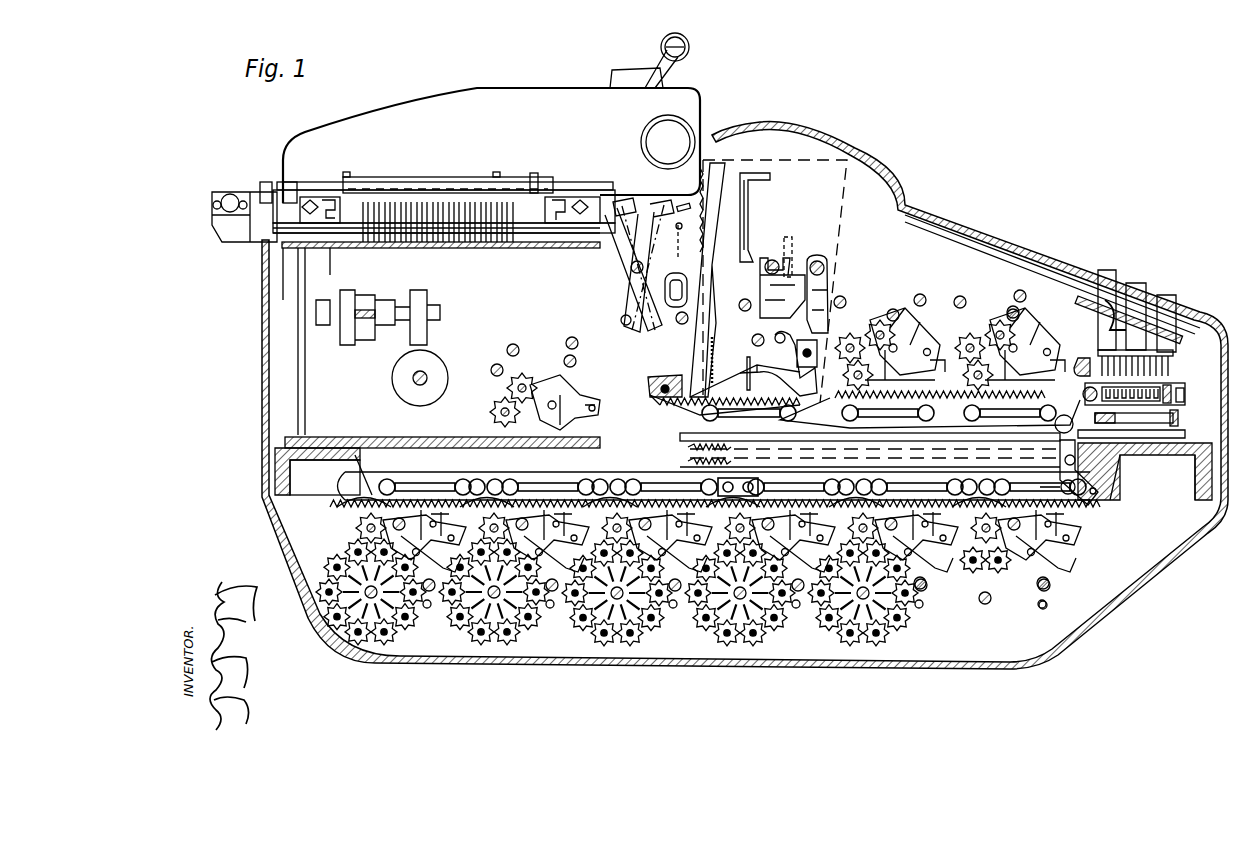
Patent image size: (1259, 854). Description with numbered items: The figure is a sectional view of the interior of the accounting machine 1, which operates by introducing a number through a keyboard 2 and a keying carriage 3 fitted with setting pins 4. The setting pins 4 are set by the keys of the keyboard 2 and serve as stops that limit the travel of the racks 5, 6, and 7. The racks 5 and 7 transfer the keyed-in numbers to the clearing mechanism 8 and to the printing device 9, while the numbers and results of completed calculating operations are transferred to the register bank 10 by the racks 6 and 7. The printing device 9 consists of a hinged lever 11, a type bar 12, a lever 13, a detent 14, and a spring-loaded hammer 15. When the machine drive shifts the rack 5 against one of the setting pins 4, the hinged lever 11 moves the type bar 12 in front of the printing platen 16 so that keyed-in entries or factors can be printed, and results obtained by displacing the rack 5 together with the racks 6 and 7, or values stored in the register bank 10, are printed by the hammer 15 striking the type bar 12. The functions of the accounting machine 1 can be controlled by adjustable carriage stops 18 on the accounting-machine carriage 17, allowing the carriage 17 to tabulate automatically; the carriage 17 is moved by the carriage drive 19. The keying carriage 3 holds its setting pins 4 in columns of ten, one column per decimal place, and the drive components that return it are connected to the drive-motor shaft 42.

The accounting machine 1 is at (866, 182).
The keyboard 2 is at (1168, 308).
The keying carriage 3 is at (1165, 420).
The setting pins 4 is at (1106, 356).
The rack 5 is at (1140, 430).
The rack 6 is at (1078, 475).
The rack 7 is at (370, 483).
The clearing mechanism 8 is at (505, 412).
The printing device 9 is at (838, 240).
The register bank 10 is at (350, 580).
The hinged lever 11 is at (830, 320).
The type bar 12 is at (705, 325).
The lever 13 is at (769, 262).
The detent 14 is at (826, 268).
The spring-loaded hammer 15 is at (745, 225).
The printing platen 16 is at (678, 135).
The accounting-machine carriage 17 is at (535, 118).
The adjustable carriage stops 18 is at (363, 226).
The carriage drive 19 is at (408, 360).
The drive-motor shaft 42 is at (413, 378).